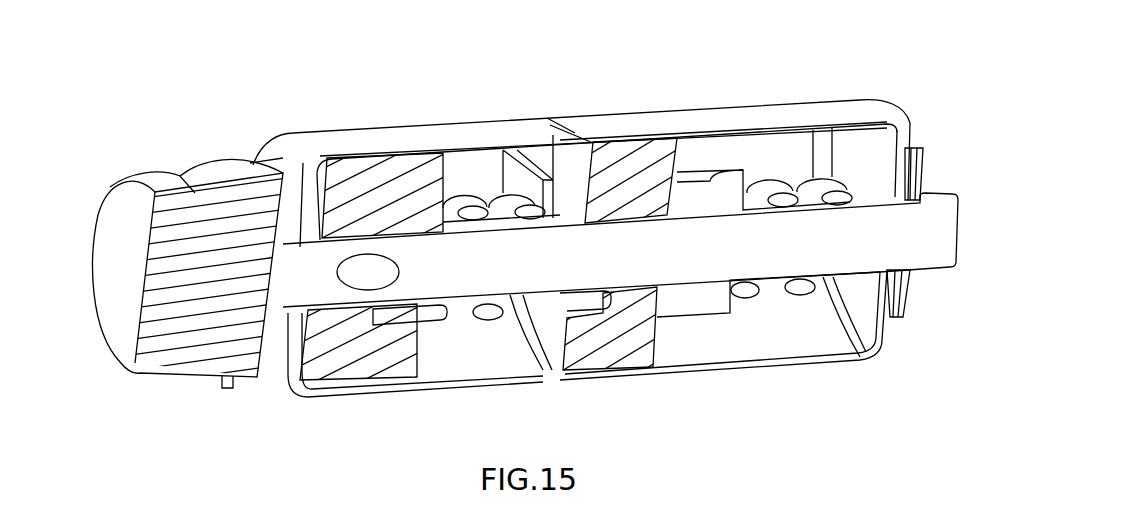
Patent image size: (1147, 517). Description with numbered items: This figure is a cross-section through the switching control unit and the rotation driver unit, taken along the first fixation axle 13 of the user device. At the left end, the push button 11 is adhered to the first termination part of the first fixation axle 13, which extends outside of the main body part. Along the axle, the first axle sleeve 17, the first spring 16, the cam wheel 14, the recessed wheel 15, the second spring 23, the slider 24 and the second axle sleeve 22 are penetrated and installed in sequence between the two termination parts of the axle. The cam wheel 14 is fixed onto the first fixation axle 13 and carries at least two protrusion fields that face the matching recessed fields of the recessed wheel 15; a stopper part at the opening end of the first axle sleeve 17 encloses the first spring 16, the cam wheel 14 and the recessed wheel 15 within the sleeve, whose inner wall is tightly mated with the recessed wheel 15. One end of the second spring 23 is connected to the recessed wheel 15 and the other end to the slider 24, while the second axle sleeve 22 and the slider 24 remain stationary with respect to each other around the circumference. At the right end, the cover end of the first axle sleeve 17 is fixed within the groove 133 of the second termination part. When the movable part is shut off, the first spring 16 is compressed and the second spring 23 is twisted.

The push button 11 is at (153, 193).
The first fixation axle 13 is at (296, 263).
The groove 133 is at (905, 303).
The cam wheel 14 is at (707, 213).
The recessed wheel 15 is at (637, 203).
The first spring 16 is at (787, 205).
The first axle sleeve 17 is at (602, 127).
The second axle sleeve 22 is at (458, 137).
The second spring 23 is at (510, 210).
The slider 24 is at (390, 187).